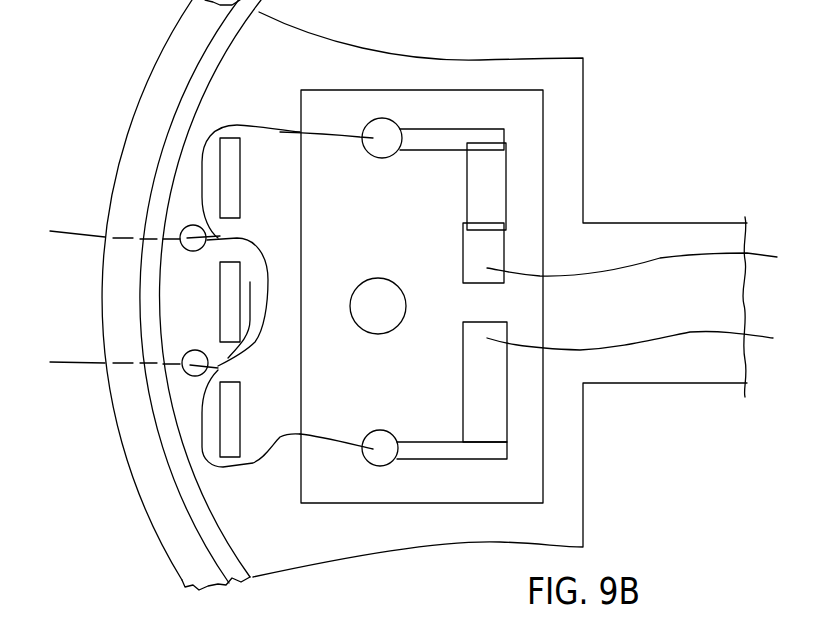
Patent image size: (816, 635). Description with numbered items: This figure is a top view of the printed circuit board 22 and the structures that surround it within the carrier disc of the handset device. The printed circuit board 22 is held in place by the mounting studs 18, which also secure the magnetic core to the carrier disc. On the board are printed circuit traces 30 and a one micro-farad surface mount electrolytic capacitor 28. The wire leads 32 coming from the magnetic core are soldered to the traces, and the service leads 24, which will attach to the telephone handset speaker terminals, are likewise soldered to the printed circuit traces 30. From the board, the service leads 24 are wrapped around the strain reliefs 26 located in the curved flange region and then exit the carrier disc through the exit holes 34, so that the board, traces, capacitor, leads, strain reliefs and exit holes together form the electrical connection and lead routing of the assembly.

The mounting studs 18 is at (387, 278).
The printed circuit board 22 is at (545, 110).
The service leads 24 is at (253, 125).
The strain reliefs 26 is at (233, 201).
The surface mount electrolytic capacitor 28 is at (506, 181).
The printed circuit traces 30 is at (427, 151).
The wire leads 32 is at (658, 258).
The exit holes 34 is at (185, 230).